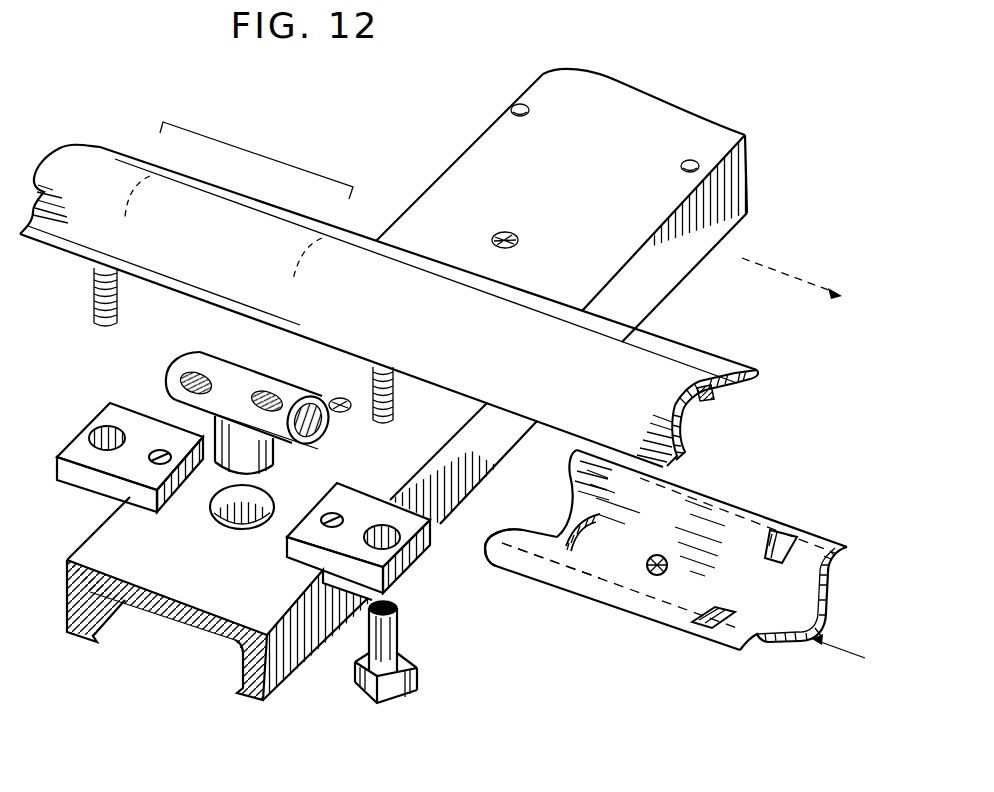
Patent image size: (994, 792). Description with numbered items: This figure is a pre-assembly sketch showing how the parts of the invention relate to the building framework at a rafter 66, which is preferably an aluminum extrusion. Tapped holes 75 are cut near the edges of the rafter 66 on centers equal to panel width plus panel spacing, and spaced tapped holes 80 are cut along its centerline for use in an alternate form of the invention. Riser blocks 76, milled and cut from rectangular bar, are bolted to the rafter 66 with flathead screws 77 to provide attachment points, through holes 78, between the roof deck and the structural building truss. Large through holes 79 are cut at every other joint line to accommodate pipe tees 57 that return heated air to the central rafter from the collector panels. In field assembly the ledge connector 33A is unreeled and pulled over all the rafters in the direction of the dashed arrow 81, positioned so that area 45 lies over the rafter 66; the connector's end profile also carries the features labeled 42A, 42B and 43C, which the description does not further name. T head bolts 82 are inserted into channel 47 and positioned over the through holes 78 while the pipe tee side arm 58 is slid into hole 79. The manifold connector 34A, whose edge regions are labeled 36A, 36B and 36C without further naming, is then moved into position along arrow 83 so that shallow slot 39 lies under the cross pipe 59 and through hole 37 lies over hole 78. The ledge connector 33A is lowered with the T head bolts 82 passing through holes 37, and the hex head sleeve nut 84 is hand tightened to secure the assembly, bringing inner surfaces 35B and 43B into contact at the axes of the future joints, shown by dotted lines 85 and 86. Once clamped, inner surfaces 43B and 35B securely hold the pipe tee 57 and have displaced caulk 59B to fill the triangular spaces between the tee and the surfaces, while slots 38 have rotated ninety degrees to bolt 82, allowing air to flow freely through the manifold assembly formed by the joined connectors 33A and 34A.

The ledge connector 33A is at (81, 165).
The area 45 is at (256, 160).
The rafter 66 is at (485, 177).
The tapped holes 75 is at (516, 105).
The spaced tapped holes 80 is at (508, 233).
The dashed arrow 81 is at (792, 261).
The T head bolts 82 is at (93, 302).
The cross pipe 59 is at (223, 388).
The caulk 59B is at (192, 380).
The pipe tee 57 is at (265, 394).
The pipe tee side arm 58 is at (250, 440).
The large through holes 79 is at (225, 521).
The riser blocks 76 is at (255, 513).
The through holes 78 is at (103, 435).
The flathead screws 77 is at (152, 458).
The hex head sleeve nut 84 is at (392, 697).
The rail lip tip 43C is at (760, 373).
The rail upper flange 42B is at (737, 372).
The rail flange bend 42A is at (686, 383).
The inner surface 43B is at (683, 433).
The channel 47 is at (706, 398).
The manifold connector 34A is at (660, 593).
The dotted line 85 is at (488, 545).
The inner surface 35B is at (527, 540).
The dotted line 86 is at (578, 456).
The shallow slot 39 is at (599, 523).
The through hole 37 is at (650, 560).
The slots 38 is at (779, 530).
The clip bend bottom 36A is at (800, 642).
The clip bend upright 36B is at (830, 562).
The clip bend hook 36C is at (845, 548).
The arrow 83 is at (842, 659).